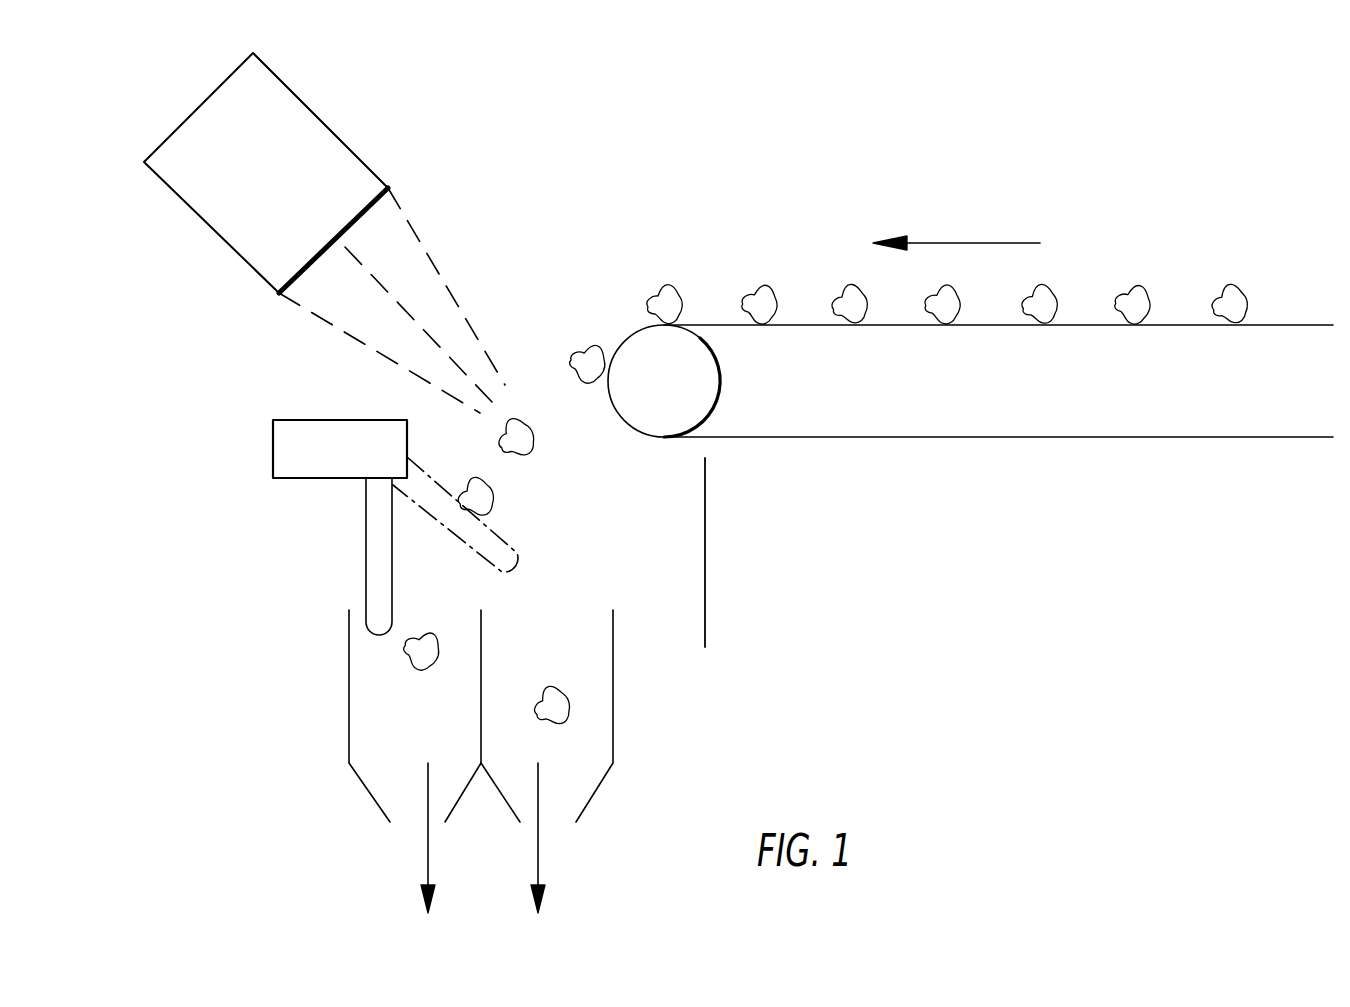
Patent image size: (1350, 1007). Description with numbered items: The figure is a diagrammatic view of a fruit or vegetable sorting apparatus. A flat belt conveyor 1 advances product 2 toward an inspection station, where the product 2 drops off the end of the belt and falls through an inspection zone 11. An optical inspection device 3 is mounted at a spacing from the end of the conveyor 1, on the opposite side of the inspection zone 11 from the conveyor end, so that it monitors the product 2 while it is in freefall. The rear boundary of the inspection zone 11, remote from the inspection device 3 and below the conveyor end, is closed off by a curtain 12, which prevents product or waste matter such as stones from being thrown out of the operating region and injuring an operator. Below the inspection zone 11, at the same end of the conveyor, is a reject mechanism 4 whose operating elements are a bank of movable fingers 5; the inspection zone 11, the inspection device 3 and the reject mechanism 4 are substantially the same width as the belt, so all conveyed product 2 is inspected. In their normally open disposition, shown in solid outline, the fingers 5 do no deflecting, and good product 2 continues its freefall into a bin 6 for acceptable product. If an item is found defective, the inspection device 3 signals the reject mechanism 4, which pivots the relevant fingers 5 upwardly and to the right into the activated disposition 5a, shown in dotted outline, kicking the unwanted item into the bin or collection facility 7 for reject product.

The flat belt conveyor 1 is at (1260, 325).
The product 2 is at (757, 290).
The optical inspection device 3 is at (333, 143).
The reject mechanism 4 is at (276, 446).
The movable fingers 5 is at (377, 545).
The fingers in activated disposition 5a is at (500, 548).
The bin for acceptable product 6 is at (349, 732).
The bin for reject product 7 is at (613, 735).
The inspection zone 11 is at (543, 395).
The curtain 12 is at (706, 540).